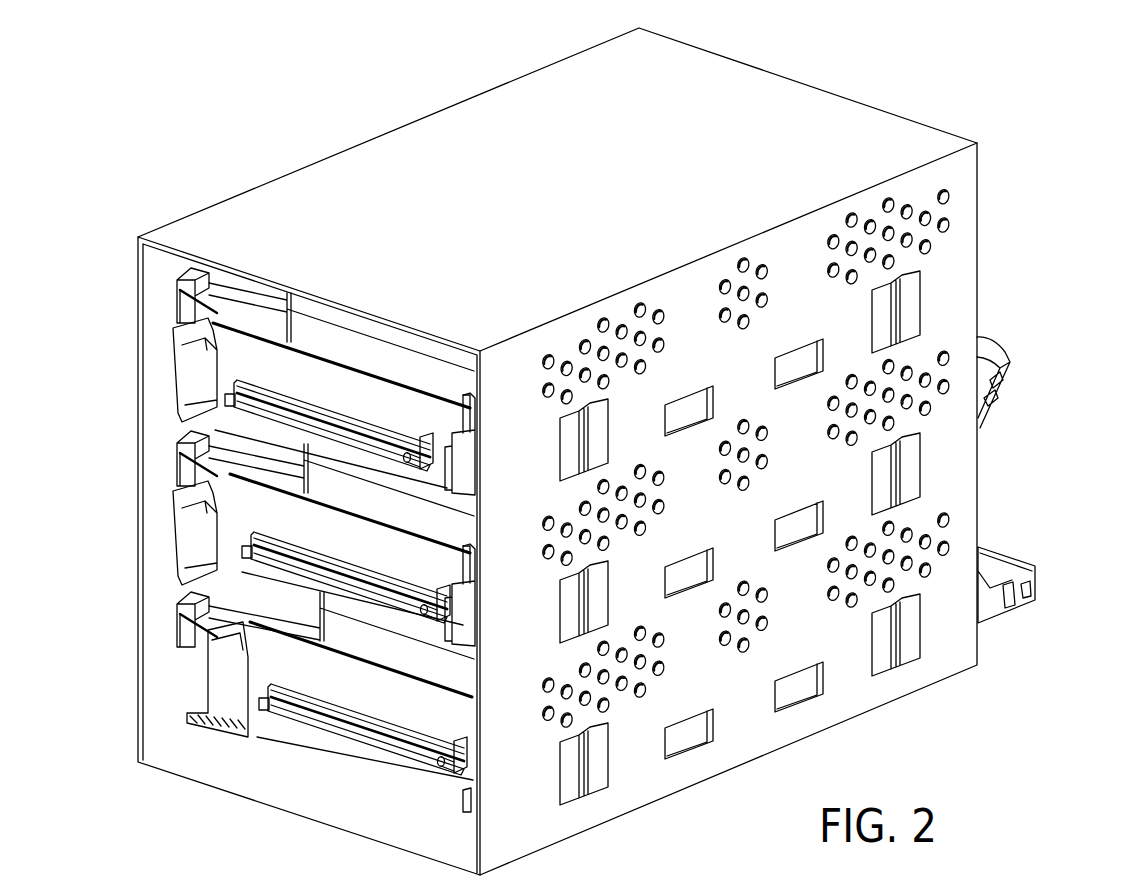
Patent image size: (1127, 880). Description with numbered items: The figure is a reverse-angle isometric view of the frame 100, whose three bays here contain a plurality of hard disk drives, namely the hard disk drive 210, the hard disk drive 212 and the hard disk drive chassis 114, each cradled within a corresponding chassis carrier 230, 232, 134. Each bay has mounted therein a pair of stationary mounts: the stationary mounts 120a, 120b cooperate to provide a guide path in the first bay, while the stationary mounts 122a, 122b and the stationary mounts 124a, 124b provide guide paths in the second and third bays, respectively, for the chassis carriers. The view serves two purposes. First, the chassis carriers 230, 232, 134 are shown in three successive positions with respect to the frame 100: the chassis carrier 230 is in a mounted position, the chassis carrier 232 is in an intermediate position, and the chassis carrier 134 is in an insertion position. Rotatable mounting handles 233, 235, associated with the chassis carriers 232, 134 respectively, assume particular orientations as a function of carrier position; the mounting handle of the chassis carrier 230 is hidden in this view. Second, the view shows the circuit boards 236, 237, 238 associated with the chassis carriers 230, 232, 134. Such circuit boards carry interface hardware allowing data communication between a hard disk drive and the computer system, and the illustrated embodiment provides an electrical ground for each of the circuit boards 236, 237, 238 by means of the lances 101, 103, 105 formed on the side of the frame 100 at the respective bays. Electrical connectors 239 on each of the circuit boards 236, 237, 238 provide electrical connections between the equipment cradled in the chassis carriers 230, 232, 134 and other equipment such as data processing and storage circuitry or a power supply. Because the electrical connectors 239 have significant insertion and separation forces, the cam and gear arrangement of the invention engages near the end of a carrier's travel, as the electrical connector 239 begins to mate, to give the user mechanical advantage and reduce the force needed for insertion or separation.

The frame 100 is at (528, 215).
The lance 101 is at (797, 358).
The lance 103 is at (797, 520).
The lance 105 is at (797, 681).
The hard disk drive chassis 114 is at (353, 654).
The stationary mount 120a is at (465, 466).
The stationary mount 120b is at (187, 283).
The stationary mount 122a is at (468, 600).
The stationary mount 122b is at (185, 445).
The stationary mount 124a is at (466, 803).
The stationary mount 124b is at (185, 603).
The chassis carrier 134 is at (230, 690).
The hard disk drive 210 is at (353, 364).
The hard disk drive 212 is at (353, 510).
The chassis carrier 230 is at (195, 377).
The chassis carrier 232 is at (205, 532).
The rotatable mounting handle 233 is at (1013, 360).
The rotatable mounting handle 235 is at (1018, 563).
The circuit board 236 is at (308, 396).
The circuit board 237 is at (308, 542).
The circuit board 238 is at (308, 689).
The electrical connector 239 is at (375, 436).